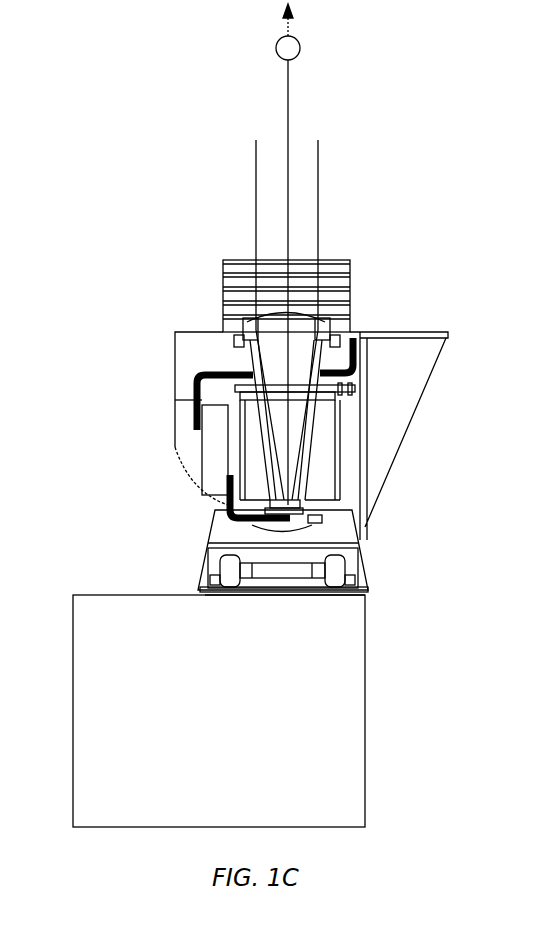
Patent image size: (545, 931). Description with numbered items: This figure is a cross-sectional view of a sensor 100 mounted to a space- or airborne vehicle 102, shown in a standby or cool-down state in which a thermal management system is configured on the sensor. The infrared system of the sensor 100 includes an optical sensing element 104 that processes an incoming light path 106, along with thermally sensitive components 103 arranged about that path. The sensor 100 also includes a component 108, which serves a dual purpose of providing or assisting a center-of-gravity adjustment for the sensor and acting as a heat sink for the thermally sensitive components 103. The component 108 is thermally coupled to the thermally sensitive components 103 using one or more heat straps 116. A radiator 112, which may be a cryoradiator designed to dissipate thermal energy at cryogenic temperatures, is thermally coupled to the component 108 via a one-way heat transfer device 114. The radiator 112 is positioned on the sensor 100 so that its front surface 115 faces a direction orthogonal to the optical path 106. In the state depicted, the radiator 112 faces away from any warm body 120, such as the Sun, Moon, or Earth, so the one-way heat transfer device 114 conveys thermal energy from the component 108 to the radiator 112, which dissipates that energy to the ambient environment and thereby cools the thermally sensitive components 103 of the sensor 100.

The sensor 100 is at (138, 356).
The space- or airborne vehicle 102 is at (219, 711).
The thermally sensitive components 103 is at (305, 483).
The optical sensing element 104 is at (300, 512).
The incoming light path 106 is at (288, 166).
The component 108 is at (215, 445).
The radiator 112 is at (360, 402).
The one-way heat transfer device 114 is at (195, 400).
The front surface 115 is at (367, 430).
The heat straps 116 is at (217, 505).
The warm body 120 is at (298, 42).